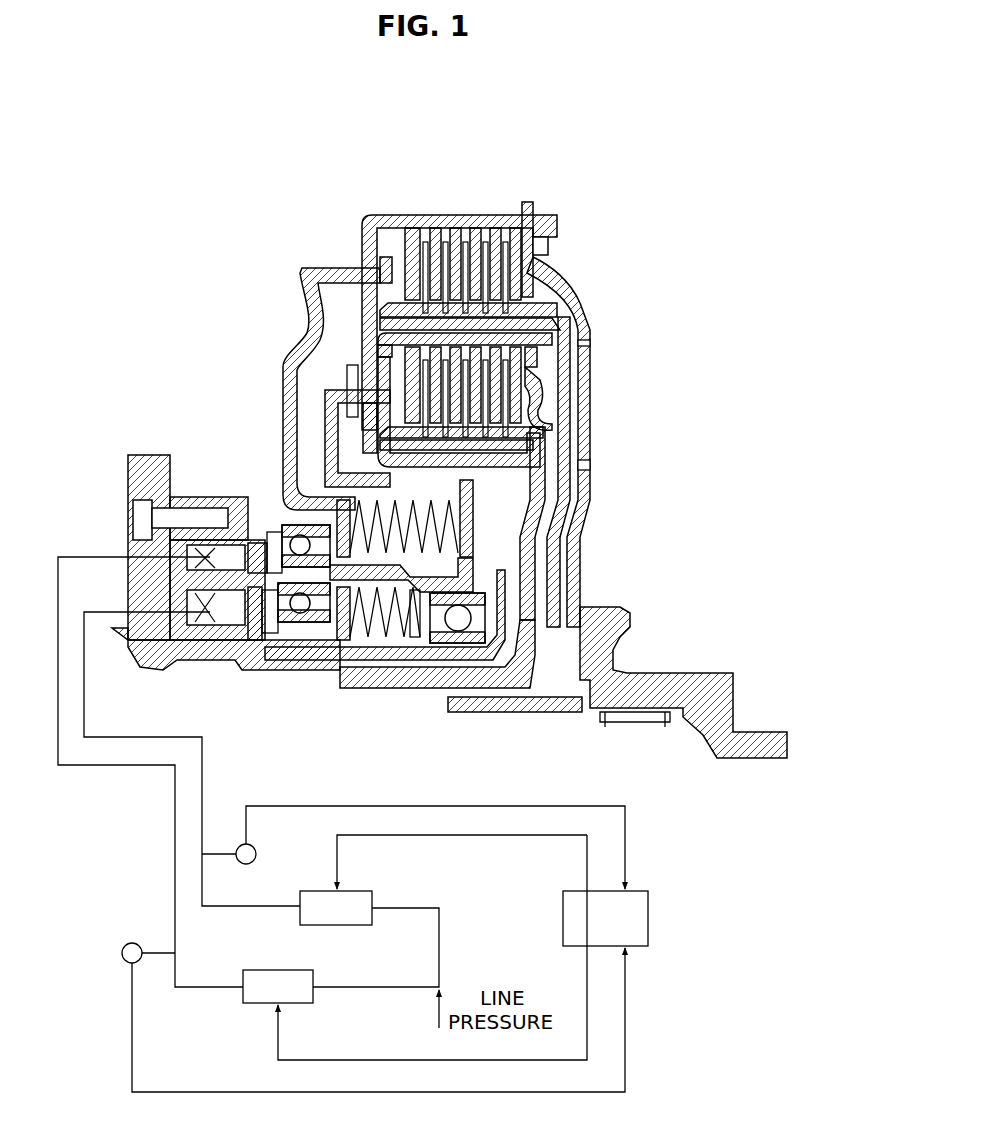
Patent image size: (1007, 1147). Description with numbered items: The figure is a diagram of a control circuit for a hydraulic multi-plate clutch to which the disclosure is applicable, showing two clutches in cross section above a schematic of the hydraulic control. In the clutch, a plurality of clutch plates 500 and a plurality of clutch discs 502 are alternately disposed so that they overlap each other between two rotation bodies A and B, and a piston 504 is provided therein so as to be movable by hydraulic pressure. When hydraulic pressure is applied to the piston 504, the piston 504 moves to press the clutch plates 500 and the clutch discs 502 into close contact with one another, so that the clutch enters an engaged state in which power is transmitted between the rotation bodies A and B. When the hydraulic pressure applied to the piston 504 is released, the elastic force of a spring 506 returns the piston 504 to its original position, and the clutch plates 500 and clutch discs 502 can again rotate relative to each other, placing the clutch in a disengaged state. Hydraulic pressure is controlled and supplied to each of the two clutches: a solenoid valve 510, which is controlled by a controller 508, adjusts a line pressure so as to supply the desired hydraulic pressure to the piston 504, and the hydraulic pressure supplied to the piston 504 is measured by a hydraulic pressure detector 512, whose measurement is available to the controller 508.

The clutch plates 500 is at (495, 245).
The clutch discs 502 is at (495, 262).
The piston 504 is at (238, 496).
The spring 506 is at (453, 502).
The controller 508 is at (650, 917).
The solenoid valve 510 is at (247, 1004).
The hydraulic pressure detector 512 is at (125, 945).
The rotation body A is at (398, 214).
The rotation body B is at (560, 318).